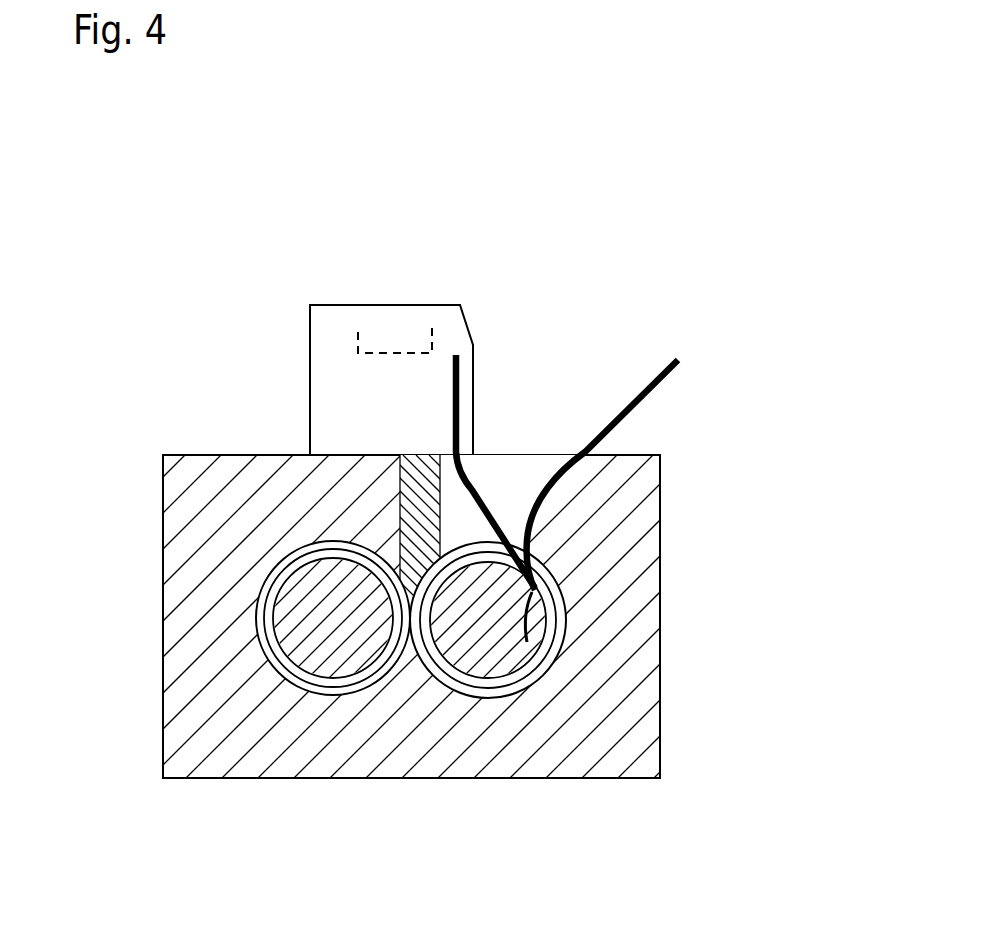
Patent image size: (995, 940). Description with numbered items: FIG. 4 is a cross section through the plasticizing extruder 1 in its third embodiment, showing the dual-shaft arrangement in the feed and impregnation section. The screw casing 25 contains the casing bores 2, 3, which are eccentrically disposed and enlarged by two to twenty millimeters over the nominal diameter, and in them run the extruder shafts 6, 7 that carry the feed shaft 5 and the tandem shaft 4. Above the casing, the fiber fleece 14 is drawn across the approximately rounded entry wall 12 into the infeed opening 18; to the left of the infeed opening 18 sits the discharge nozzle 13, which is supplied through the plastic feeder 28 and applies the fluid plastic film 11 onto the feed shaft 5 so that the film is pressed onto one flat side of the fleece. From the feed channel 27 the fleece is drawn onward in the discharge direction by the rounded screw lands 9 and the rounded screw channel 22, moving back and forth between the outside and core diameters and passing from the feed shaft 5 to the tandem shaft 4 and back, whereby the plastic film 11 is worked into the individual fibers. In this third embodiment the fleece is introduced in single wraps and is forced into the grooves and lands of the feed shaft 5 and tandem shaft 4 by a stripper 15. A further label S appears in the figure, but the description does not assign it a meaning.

The plasticizing extruder 1 is at (716, 780).
The casing bore 2 is at (313, 540).
The casing bore 3 is at (722, 512).
The tandem shaft 4 is at (322, 640).
The feed shaft 5 is at (483, 625).
The extruder shaft 6 is at (343, 615).
The extruder shaft 7 is at (700, 574).
The screw lands 9 is at (475, 733).
The plastic film 11 is at (400, 455).
The entry wall 12 is at (592, 510).
The discharge nozzle 13 is at (342, 387).
The fiber fleece 14 is at (680, 362).
The stripper 15 is at (418, 513).
The infeed opening 18 is at (507, 488).
The screw channel 22 is at (500, 680).
The screw casing 25 is at (630, 729).
The feed channel 27 is at (338, 732).
The plastic feeder 28 is at (398, 330).
The gap S is at (662, 435).